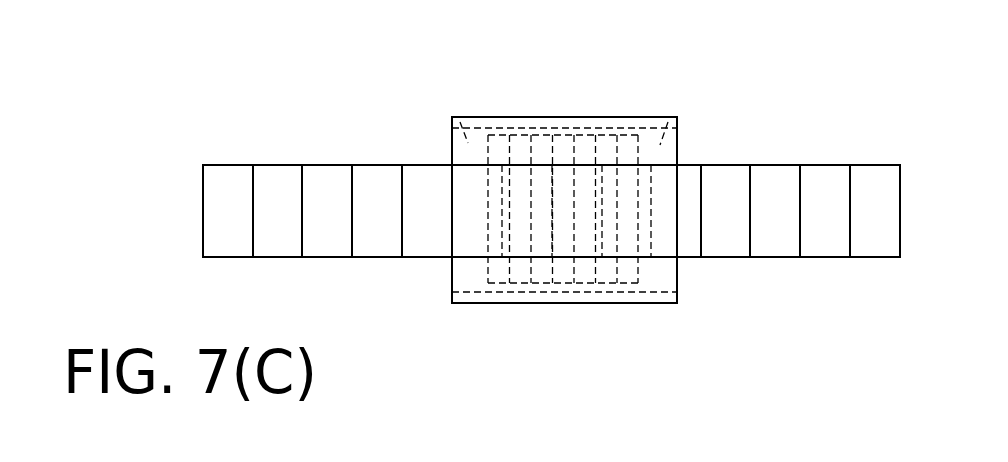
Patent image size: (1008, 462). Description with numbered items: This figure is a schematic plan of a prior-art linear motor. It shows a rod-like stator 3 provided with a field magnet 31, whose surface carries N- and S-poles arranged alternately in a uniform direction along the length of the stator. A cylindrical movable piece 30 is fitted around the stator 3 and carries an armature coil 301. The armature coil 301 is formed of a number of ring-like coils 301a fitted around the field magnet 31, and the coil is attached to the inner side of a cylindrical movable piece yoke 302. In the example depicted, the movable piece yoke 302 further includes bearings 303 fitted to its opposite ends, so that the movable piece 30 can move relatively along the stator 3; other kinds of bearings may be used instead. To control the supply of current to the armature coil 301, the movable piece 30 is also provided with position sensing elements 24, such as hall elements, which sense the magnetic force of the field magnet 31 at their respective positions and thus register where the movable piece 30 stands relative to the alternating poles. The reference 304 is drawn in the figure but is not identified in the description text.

The stator 3 is at (284, 108).
The field magnet 31 is at (236, 172).
The position sensing elements 24 is at (525, 225).
The movable piece 30 is at (567, 86).
The armature coil 301 is at (600, 120).
The ring-like coils 301a is at (655, 330).
The movable piece yoke 302 is at (513, 117).
The bearings 303 is at (460, 122).
The side walls 304 is at (451, 146).